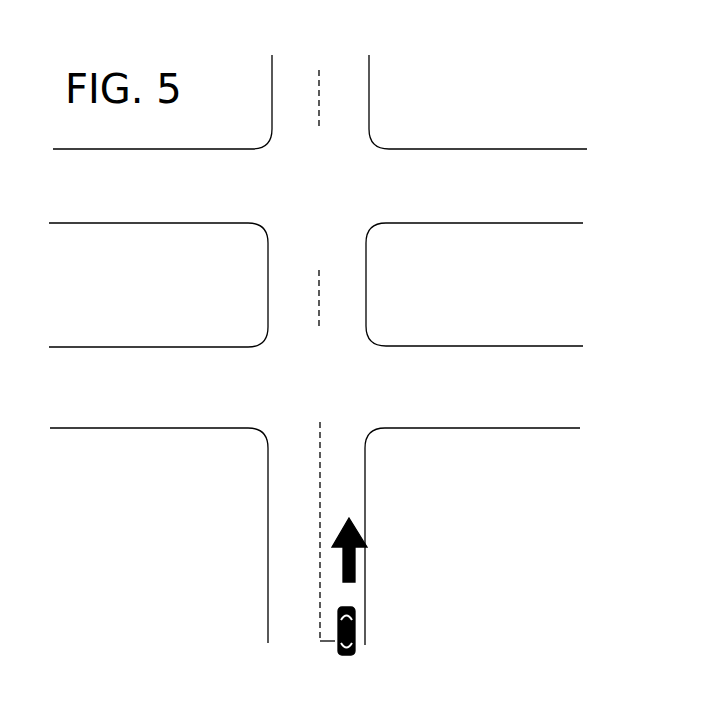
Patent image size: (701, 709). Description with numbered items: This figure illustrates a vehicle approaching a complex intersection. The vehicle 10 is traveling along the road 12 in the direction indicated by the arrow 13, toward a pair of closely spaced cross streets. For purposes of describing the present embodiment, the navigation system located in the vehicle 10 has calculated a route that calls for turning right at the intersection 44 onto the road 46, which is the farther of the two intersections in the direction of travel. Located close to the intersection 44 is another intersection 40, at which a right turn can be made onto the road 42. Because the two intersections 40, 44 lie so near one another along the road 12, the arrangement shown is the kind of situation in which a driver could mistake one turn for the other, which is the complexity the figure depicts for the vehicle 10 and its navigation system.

The vehicle 10 is at (338, 645).
The road 12 is at (268, 520).
The arrow 13 is at (355, 567).
The intersection 40 is at (356, 373).
The road 42 is at (459, 340).
The intersection 44 is at (347, 178).
The road 46 is at (468, 147).